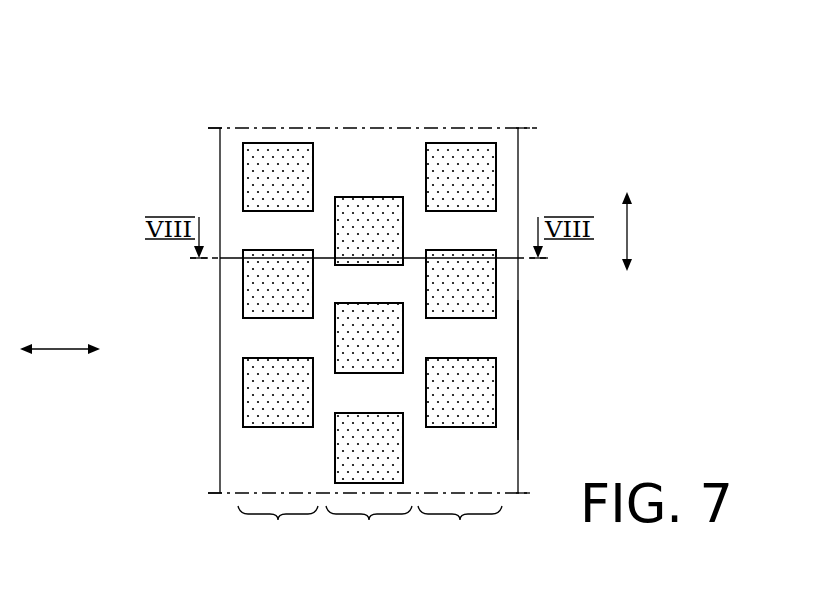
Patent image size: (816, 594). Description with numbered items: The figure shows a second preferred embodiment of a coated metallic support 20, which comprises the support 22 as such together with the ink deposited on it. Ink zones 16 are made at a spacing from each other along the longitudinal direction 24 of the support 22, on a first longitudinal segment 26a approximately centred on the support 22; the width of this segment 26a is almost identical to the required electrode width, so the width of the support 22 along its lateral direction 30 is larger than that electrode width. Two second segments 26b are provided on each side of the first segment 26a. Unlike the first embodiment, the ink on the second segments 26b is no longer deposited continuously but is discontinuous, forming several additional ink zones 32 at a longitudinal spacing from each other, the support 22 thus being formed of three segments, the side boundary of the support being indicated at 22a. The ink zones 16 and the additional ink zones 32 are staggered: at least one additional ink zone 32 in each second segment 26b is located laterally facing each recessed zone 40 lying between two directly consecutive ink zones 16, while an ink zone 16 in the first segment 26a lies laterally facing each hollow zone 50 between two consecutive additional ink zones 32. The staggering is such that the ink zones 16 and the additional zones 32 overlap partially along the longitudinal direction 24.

The ink zone 16 is at (370, 213).
The coated metallic support 20 is at (206, 122).
The support 22 is at (524, 165).
The side boundary portion 22a is at (508, 373).
The longitudinal direction 24 is at (630, 228).
The first longitudinal segment 26a is at (369, 528).
The second segment 26b is at (370, 528).
The lateral direction 30 is at (63, 347).
The additional ink zone 32 is at (278, 160).
The recessed zone 40 is at (385, 297).
The hollow zone 50 is at (294, 244).